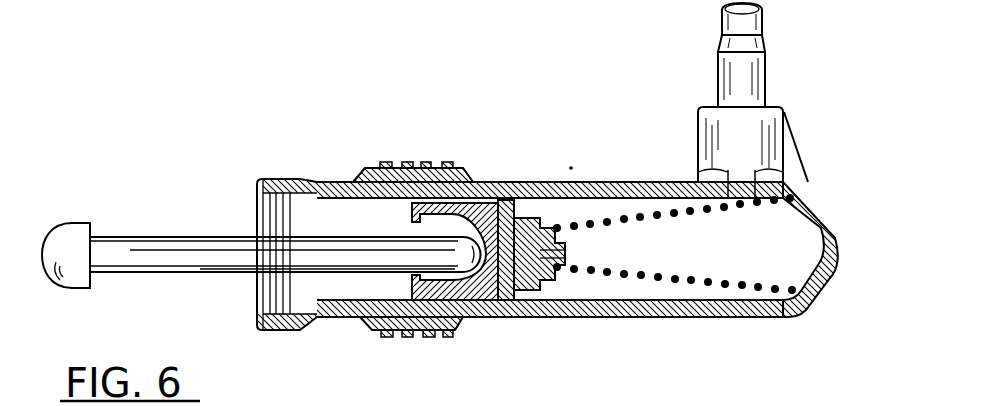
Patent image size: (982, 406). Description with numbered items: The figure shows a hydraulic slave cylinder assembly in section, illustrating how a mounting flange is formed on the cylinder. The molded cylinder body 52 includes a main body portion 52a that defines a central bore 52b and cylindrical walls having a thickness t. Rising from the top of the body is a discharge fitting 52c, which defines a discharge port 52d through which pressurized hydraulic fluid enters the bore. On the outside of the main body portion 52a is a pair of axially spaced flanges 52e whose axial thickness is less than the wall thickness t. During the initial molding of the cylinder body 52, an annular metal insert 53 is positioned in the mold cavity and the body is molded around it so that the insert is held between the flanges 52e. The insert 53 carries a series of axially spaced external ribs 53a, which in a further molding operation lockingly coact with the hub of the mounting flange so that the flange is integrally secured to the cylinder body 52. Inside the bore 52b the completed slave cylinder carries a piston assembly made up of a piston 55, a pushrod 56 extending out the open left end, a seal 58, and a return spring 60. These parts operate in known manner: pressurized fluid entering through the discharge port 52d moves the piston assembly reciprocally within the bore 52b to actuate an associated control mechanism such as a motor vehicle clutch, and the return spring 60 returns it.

The cylinder body 52 is at (608, 178).
The main body portion 52a is at (560, 178).
The central bore 52b is at (650, 208).
The discharge fitting 52c is at (763, 75).
The discharge port 52d is at (745, 172).
The axially spaced flanges 52e is at (373, 168).
The annular metal insert 53 is at (392, 352).
The external ribs 53a is at (426, 337).
The piston 55 is at (500, 235).
The pushrod 56 is at (207, 235).
The seal 58 is at (530, 305).
The return spring 60 is at (750, 293).
The wall thickness t is at (605, 280).